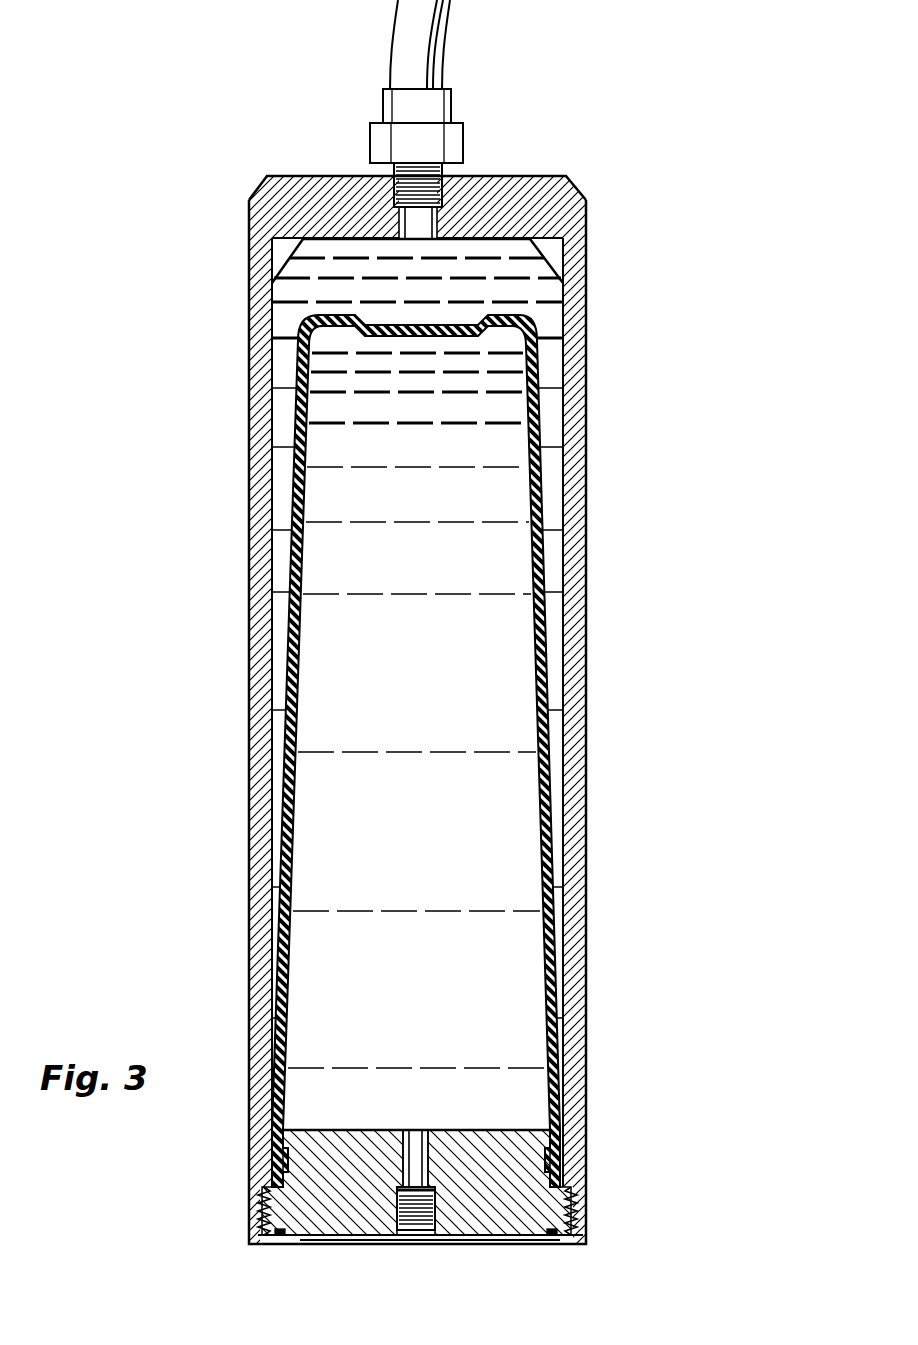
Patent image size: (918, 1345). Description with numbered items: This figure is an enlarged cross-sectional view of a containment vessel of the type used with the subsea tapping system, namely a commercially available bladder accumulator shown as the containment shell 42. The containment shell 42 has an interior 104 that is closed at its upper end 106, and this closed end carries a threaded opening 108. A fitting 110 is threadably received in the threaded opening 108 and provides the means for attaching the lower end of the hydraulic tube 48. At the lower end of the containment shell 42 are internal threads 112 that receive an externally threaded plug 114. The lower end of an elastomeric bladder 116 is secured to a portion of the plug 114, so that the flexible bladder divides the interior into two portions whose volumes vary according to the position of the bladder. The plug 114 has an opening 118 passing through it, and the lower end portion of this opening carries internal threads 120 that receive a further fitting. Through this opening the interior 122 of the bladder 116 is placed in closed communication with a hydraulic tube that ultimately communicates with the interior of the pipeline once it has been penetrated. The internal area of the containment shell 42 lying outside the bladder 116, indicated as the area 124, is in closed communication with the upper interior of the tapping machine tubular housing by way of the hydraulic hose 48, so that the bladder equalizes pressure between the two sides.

The containment shell 42 is at (258, 546).
The hydraulic tube 48 is at (443, 33).
The interior 104 is at (552, 440).
The upper end 106 is at (533, 188).
The threaded opening 108 is at (396, 194).
The fitting 110 is at (455, 137).
The internal threads 112 is at (567, 1203).
The externally threaded plug 114 is at (360, 1210).
The elastomeric bladder 116 is at (542, 543).
The opening 118 is at (424, 1152).
The internal threads 120 is at (427, 1207).
The interior of bladder 122 is at (537, 667).
The internal area externally of bladder 124 is at (550, 399).